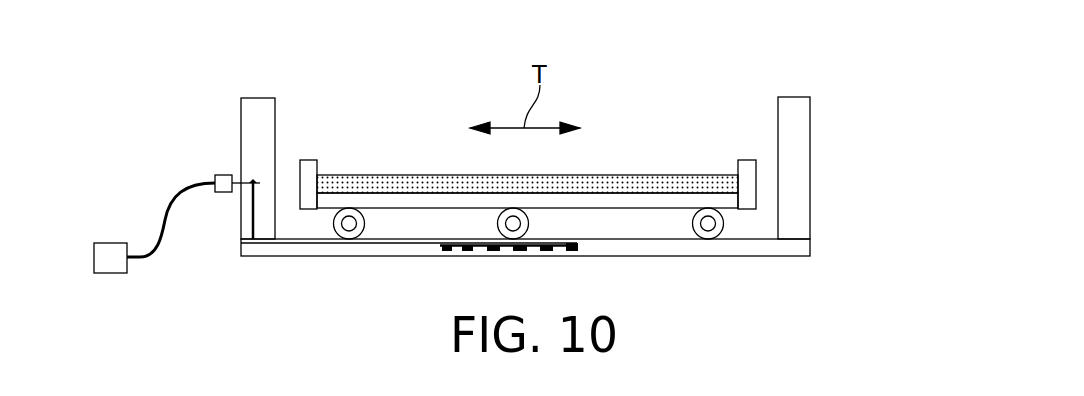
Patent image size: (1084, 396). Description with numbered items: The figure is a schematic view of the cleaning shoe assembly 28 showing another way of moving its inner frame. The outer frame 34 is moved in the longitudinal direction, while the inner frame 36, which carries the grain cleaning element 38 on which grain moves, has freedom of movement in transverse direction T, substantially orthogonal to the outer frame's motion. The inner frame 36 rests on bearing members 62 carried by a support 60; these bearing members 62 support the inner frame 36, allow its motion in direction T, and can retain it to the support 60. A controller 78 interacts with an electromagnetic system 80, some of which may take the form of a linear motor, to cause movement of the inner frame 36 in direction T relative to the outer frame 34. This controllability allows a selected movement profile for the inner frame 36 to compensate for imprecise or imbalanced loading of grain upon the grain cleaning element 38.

The cleaning shoe assembly 28 is at (799, 60).
The outer frame 34 is at (810, 133).
The inner frame 36 is at (310, 160).
The grain cleaning element 38 is at (640, 176).
The support 60 is at (757, 257).
The bearing members 62 is at (497, 229).
The controller 78 is at (105, 243).
The electromagnetic system 80 is at (485, 252).